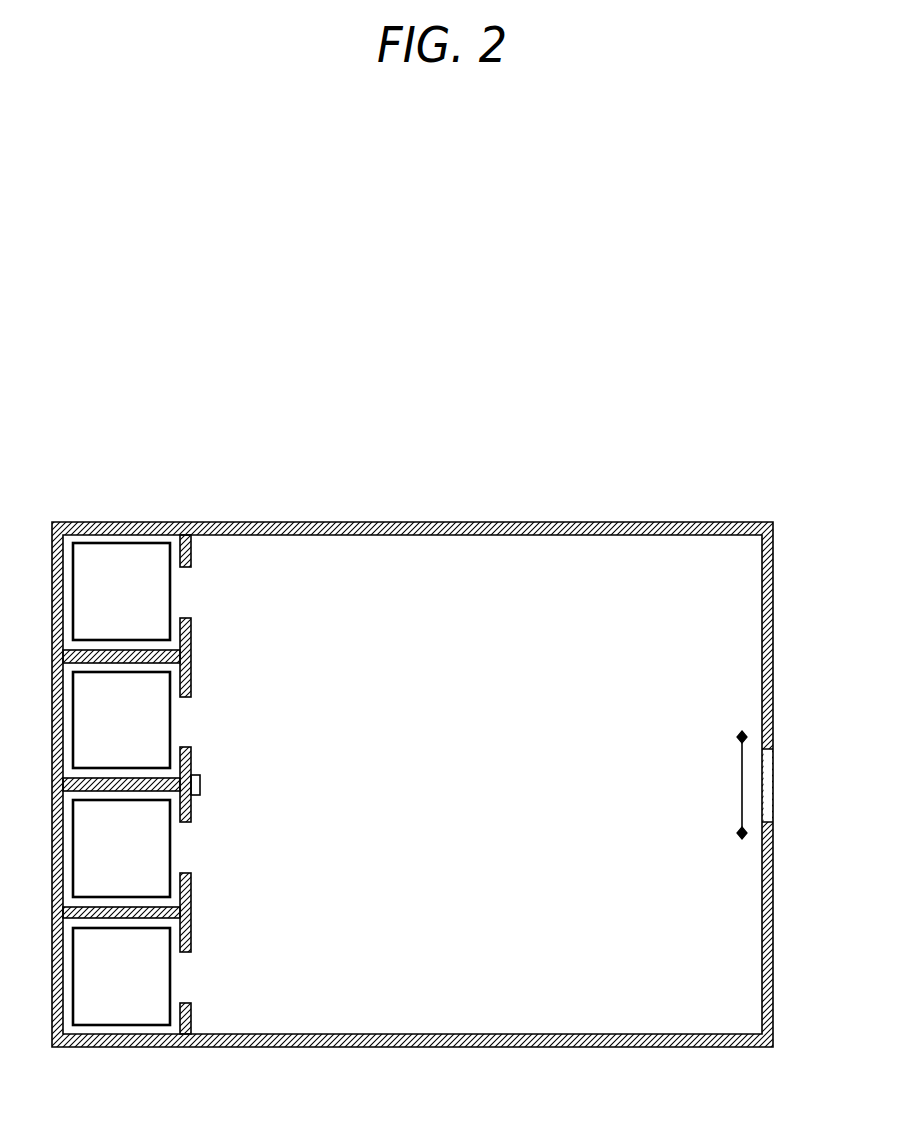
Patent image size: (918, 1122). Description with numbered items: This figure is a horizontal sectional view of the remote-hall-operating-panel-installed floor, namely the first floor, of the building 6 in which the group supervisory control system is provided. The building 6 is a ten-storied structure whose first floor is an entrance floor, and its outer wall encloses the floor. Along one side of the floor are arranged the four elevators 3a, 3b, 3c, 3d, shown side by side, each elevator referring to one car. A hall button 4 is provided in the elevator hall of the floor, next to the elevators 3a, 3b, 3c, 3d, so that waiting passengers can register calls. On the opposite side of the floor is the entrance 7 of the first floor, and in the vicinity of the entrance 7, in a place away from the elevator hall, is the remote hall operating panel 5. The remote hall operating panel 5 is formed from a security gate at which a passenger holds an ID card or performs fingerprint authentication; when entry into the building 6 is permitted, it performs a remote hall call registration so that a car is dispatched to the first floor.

The elevator 3a is at (170, 982).
The elevator 3b is at (170, 851).
The elevator 3c is at (170, 723).
The elevator 3d is at (170, 595).
The hall button 4 is at (200, 787).
The remote hall operating panel 5 is at (740, 737).
The building 6 is at (692, 522).
The entrance 7 is at (774, 785).